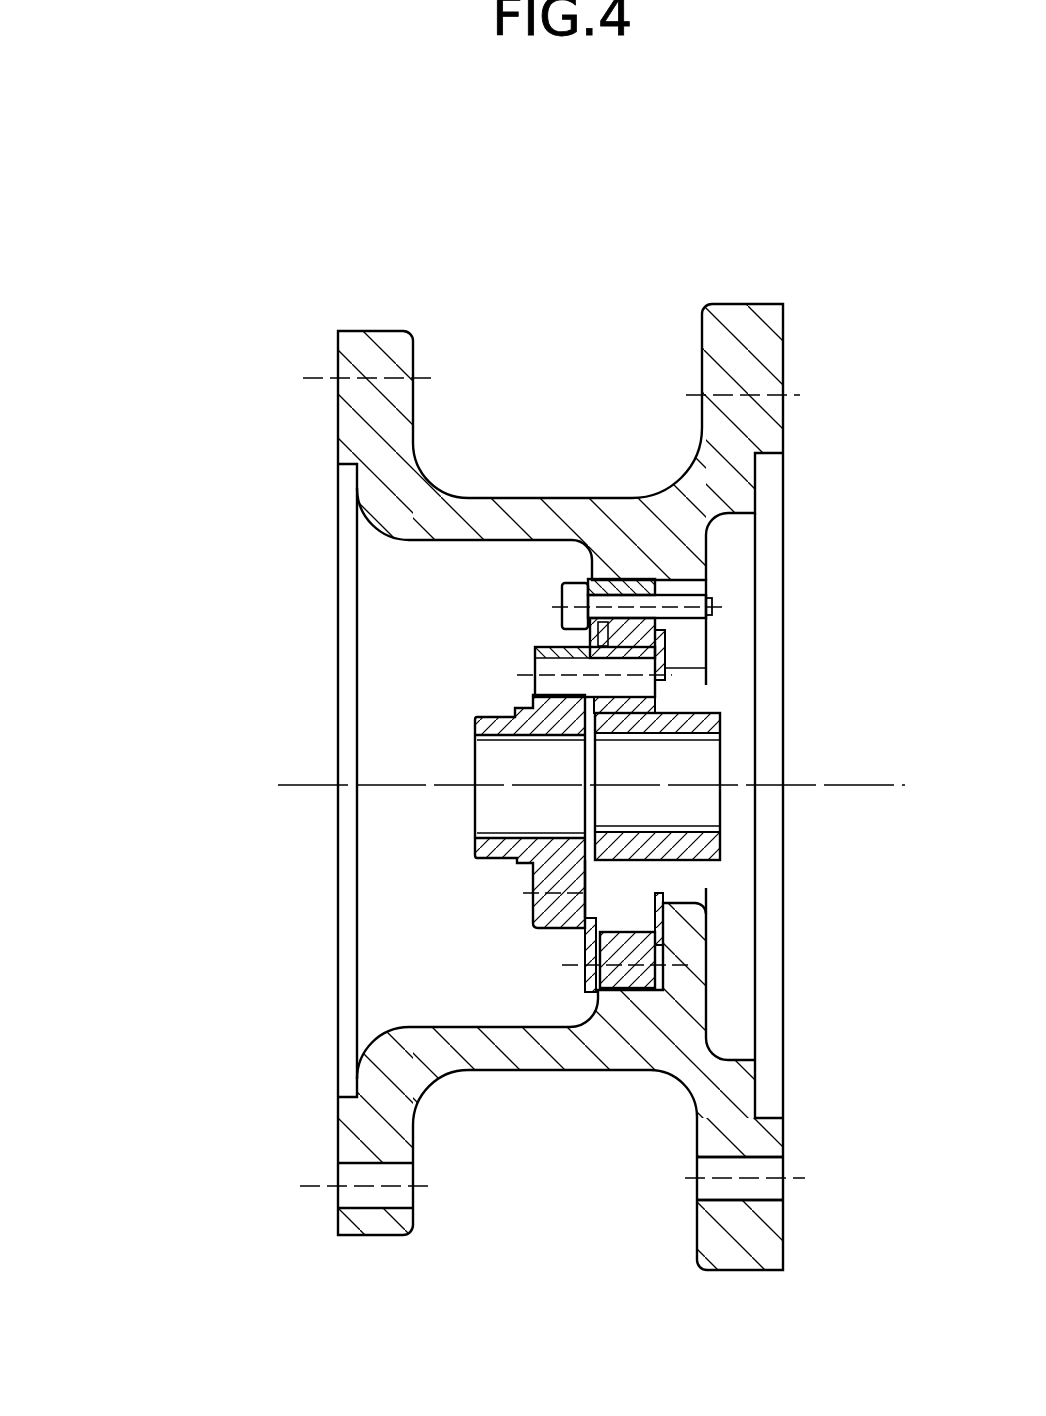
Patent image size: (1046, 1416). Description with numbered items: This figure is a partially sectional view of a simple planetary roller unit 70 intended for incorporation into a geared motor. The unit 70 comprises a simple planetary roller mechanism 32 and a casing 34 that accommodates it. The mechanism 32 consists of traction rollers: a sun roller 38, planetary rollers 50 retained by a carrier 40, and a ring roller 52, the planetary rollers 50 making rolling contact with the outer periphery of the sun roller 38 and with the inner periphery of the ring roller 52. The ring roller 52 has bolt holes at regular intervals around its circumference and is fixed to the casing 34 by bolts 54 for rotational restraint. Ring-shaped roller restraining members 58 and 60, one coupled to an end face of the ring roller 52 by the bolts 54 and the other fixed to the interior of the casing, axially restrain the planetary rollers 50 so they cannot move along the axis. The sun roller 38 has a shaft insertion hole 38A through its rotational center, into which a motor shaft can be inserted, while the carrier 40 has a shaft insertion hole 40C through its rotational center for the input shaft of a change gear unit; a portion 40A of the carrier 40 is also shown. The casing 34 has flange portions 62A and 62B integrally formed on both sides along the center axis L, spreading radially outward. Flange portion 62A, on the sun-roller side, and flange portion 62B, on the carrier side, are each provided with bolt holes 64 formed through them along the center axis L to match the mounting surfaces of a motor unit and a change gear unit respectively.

The simple planetary roller unit 70 is at (530, 246).
The casing 34 is at (567, 468).
The flange portion 62A is at (748, 302).
The flange portion 62B is at (372, 331).
The bolt holes 64 is at (758, 1199).
The center axis L is at (858, 790).
The carrier 40 is at (478, 712).
The shaft insertion hole 40C is at (487, 738).
The shaft portion 40A is at (535, 673).
The sun roller 38 is at (716, 846).
The shaft insertion hole 38A is at (691, 742).
The planetary rollers 50 is at (662, 702).
The ring roller 52 is at (622, 578).
The bolts 54 is at (562, 598).
The roller restraining member 58 is at (590, 637).
The roller restraining member 60 is at (664, 653).
The simple planetary roller mechanism 32 is at (730, 894).